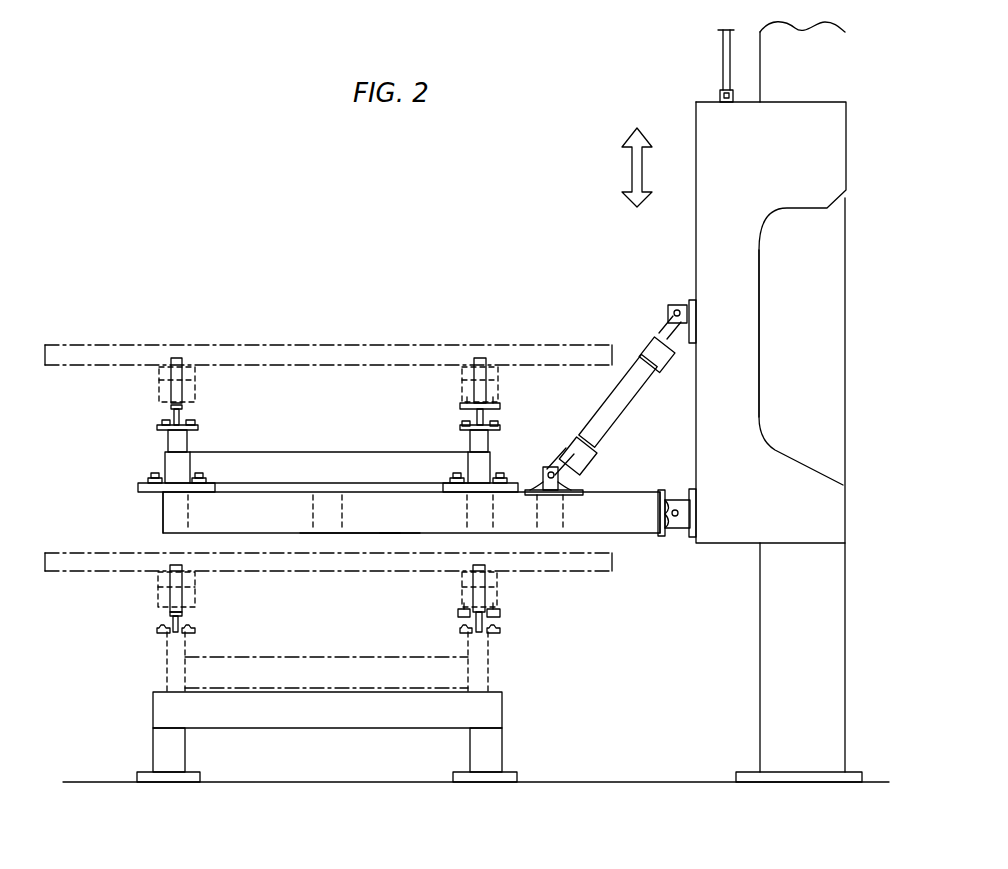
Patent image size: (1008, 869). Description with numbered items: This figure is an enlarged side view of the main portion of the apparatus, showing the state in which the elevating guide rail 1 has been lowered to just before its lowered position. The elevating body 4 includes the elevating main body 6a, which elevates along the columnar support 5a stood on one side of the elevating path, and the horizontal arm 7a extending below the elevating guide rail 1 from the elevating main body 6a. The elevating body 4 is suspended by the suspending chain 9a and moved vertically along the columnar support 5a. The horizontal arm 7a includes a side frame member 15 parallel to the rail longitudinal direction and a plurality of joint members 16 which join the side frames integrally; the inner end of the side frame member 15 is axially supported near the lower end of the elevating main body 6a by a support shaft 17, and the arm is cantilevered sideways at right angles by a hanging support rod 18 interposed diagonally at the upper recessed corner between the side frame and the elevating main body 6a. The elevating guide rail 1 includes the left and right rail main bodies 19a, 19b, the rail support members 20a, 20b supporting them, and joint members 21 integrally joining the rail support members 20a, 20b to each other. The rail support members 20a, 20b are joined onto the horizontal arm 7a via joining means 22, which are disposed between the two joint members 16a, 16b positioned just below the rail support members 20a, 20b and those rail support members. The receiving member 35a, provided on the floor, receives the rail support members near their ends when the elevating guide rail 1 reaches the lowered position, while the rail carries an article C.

The elevating guide rail 1 is at (155, 411).
The elevating body 4 is at (690, 127).
The columnar support 5a is at (770, 641).
The elevating main body 6a is at (713, 250).
The horizontal arm 7a is at (388, 538).
The suspending chain 9a is at (720, 60).
The side frame member 15 is at (353, 520).
The joint member 16 is at (328, 505).
The joint member 16a is at (173, 520).
The joint member 16b is at (483, 508).
The support shaft 17 is at (672, 495).
The hanging support rod 18 is at (615, 387).
The rail main body 19a is at (185, 420).
The rail main body 19b is at (470, 416).
The rail support member 20a is at (172, 465).
The rail support member 20b is at (475, 463).
The joint member 21 is at (297, 466).
The joining means 22 is at (201, 466).
The receiving member 35a is at (331, 712).
The workpiece C is at (124, 345).